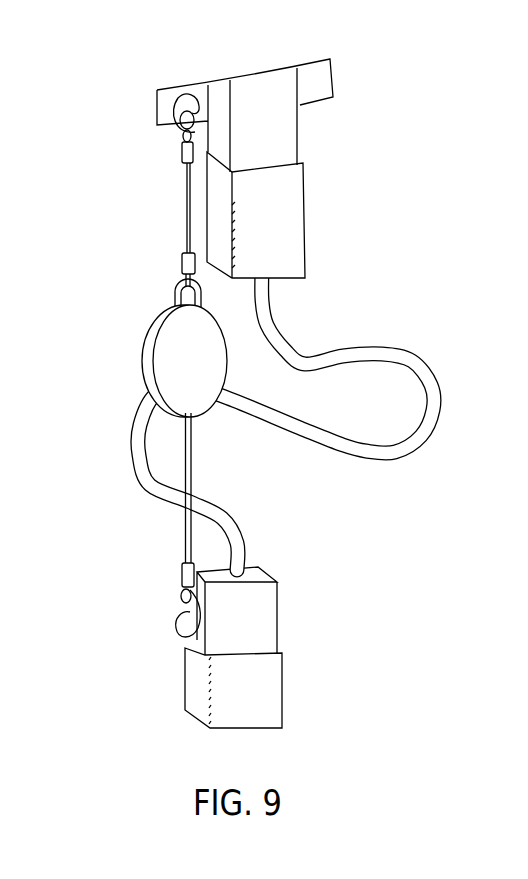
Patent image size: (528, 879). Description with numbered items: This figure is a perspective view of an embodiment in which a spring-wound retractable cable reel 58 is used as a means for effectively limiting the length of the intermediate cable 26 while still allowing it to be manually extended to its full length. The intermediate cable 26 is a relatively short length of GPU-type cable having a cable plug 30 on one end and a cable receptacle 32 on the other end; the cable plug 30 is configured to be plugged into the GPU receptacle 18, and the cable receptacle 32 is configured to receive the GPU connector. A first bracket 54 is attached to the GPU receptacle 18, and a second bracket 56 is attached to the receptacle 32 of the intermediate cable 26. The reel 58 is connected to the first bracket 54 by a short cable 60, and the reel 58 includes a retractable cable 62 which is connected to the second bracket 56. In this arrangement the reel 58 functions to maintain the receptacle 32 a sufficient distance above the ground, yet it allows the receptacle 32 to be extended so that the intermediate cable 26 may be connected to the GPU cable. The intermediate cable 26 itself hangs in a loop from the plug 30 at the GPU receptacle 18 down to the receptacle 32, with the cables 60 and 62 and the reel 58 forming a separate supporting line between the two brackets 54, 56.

The GPU receptacle 18 is at (325, 79).
The intermediate cable 26 is at (437, 350).
The cable plug 30 is at (297, 217).
The cable receptacle 32 is at (272, 692).
The first bracket 54 is at (168, 112).
The second bracket 56 is at (190, 632).
The spring-wound retractable cable reel 58 is at (147, 351).
The short cable 60 is at (186, 206).
The retractable cable 62 is at (190, 467).